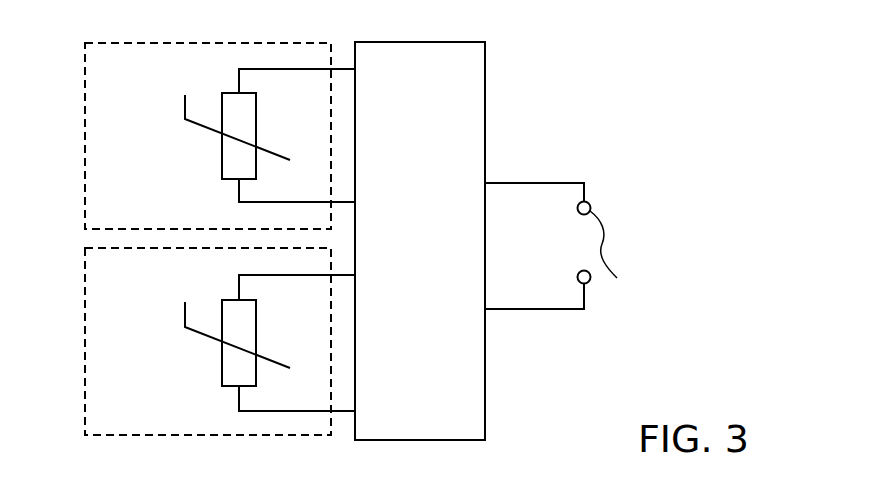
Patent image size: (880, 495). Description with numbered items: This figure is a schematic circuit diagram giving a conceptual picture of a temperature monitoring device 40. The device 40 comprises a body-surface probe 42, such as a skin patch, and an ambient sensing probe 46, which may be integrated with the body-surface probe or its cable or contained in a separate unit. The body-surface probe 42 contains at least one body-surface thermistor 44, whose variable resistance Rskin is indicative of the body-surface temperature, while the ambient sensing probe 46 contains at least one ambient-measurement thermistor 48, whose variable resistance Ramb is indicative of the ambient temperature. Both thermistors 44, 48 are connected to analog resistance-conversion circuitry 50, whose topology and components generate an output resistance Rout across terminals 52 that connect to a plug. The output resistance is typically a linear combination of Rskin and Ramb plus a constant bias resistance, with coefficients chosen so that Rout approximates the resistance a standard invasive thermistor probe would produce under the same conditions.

The temperature monitoring device 40 is at (668, 95).
The body-surface probe 42 is at (85, 170).
The body-surface thermistor 44 is at (222, 173).
The ambient sensing probe 46 is at (85, 345).
The ambient-measurement thermistor 48 is at (222, 376).
The analog resistance-conversion circuitry 50 is at (485, 86).
The terminals 52 is at (590, 278).